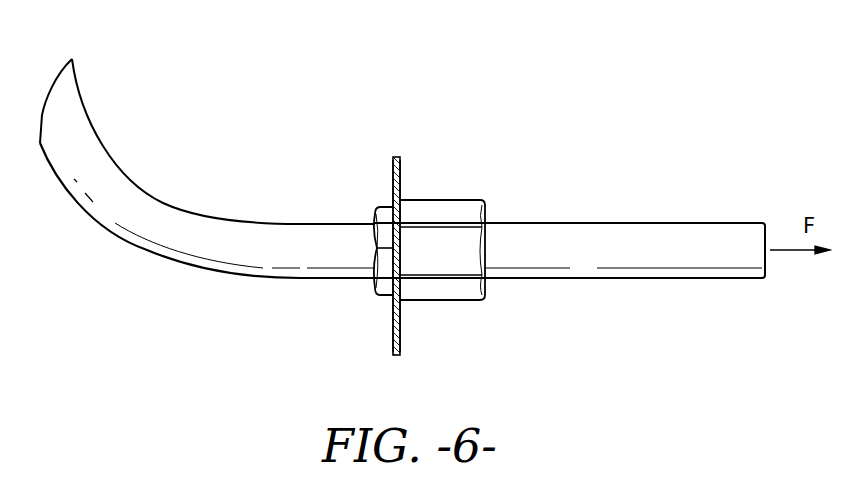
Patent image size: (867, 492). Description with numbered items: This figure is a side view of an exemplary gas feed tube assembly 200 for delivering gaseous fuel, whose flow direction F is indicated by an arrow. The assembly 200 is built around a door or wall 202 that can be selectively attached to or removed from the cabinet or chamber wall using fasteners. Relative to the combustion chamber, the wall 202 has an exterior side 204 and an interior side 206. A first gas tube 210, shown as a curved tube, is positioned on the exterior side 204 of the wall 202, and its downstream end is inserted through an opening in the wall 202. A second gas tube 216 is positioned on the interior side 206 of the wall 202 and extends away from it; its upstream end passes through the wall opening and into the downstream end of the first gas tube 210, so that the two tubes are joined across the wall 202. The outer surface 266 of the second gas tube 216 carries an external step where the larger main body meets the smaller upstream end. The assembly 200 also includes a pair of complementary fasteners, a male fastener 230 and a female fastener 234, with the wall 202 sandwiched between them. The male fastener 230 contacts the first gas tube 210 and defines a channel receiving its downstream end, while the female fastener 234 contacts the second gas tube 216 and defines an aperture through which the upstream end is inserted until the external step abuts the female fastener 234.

The gas feed tube assembly 200 is at (503, 87).
The door or wall 202 is at (400, 168).
The exterior side 204 is at (393, 330).
The interior side 206 is at (401, 187).
The first gas tube 210 is at (113, 177).
The second gas tube 216 is at (665, 232).
The male fastener 230 is at (385, 220).
The female fastener 234 is at (453, 288).
The outer surface 266 is at (567, 223).